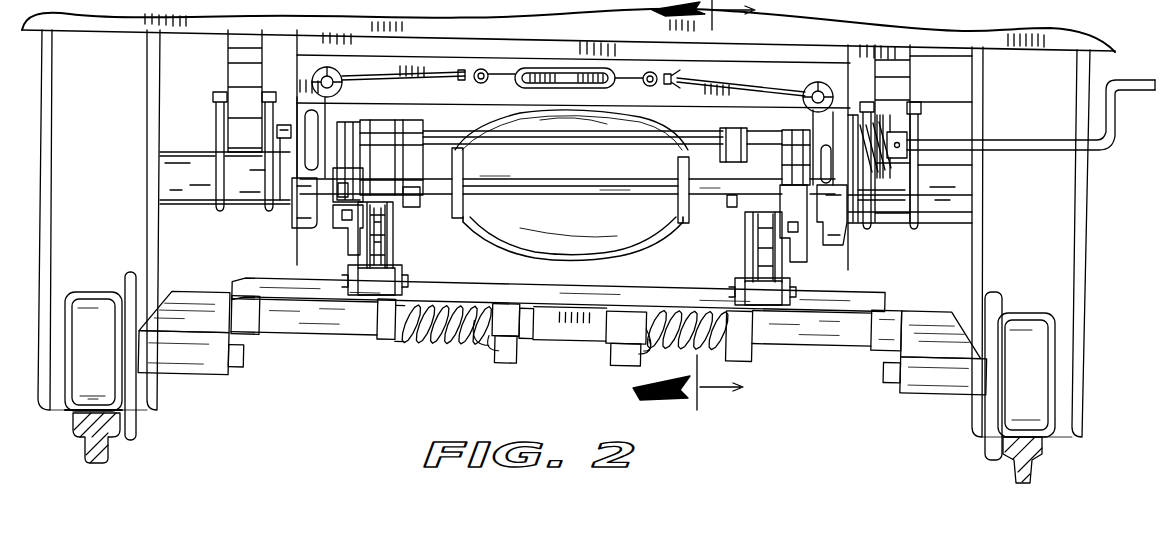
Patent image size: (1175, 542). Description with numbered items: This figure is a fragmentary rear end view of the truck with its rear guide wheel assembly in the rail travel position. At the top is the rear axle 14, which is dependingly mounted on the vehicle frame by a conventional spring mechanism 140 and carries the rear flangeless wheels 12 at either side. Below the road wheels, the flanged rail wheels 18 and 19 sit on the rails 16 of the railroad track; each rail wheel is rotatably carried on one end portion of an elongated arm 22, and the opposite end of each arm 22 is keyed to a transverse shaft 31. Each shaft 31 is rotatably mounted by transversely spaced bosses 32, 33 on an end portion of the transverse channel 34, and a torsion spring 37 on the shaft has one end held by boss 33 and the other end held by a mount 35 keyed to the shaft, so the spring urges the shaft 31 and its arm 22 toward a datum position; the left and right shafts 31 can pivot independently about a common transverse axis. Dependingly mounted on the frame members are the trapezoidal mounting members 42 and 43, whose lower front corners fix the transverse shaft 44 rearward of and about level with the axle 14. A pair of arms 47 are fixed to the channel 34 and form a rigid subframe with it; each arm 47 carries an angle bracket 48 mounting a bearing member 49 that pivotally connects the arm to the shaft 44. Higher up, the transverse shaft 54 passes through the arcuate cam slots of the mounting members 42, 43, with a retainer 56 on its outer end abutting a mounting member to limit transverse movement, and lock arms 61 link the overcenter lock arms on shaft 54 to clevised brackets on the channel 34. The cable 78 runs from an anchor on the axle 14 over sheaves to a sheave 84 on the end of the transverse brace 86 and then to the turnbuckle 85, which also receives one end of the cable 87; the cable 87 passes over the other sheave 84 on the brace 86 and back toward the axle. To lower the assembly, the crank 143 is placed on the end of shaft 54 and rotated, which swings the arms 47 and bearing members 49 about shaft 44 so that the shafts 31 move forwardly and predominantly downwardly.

The rear flangeless wheels 12 is at (68, 192).
The rear axle 14 is at (945, 210).
The rails 16 is at (107, 449).
The flanged rail wheel 18 is at (83, 313).
The flanged rail wheel 19 is at (1028, 337).
The elongated arm 22 is at (210, 363).
The transverse shaft 31 is at (330, 318).
The boss 32 is at (253, 333).
The boss 33 is at (393, 340).
The transverse channel 34 is at (440, 287).
The mount 35 is at (505, 355).
The torsion spring 37 is at (462, 343).
The mounting member 42 is at (842, 247).
The mounting member 43 is at (290, 222).
The transverse shaft 44 is at (613, 193).
The arm 47 is at (393, 242).
The angle bracket 48 is at (348, 248).
The bearing member 49 is at (340, 200).
The transverse shaft 54 is at (577, 140).
The retainer 56 is at (270, 130).
The lock arm 61 is at (380, 250).
The cable 78 is at (737, 80).
The sheave 84 is at (343, 83).
The turnbuckle 85 is at (572, 68).
The transverse brace 86 is at (667, 92).
The cable 87 is at (385, 70).
The spring mechanism 140 is at (230, 54).
The crank 143 is at (1098, 157).